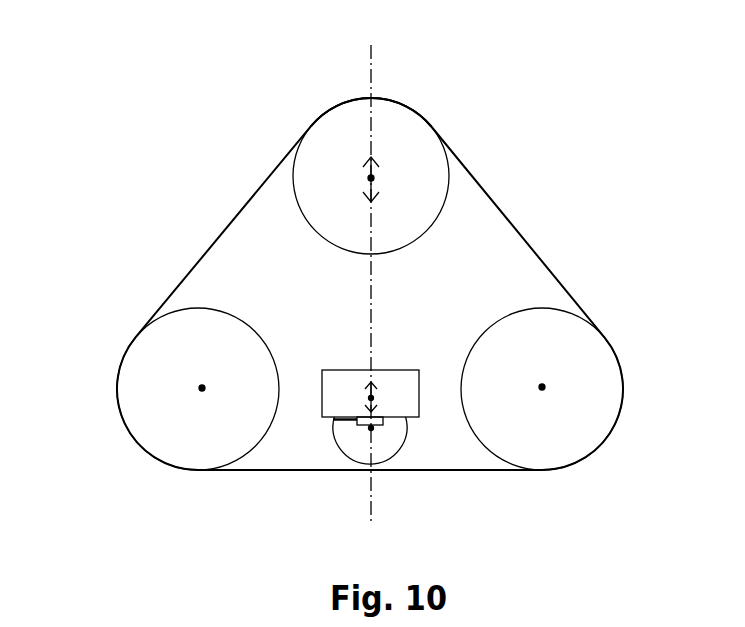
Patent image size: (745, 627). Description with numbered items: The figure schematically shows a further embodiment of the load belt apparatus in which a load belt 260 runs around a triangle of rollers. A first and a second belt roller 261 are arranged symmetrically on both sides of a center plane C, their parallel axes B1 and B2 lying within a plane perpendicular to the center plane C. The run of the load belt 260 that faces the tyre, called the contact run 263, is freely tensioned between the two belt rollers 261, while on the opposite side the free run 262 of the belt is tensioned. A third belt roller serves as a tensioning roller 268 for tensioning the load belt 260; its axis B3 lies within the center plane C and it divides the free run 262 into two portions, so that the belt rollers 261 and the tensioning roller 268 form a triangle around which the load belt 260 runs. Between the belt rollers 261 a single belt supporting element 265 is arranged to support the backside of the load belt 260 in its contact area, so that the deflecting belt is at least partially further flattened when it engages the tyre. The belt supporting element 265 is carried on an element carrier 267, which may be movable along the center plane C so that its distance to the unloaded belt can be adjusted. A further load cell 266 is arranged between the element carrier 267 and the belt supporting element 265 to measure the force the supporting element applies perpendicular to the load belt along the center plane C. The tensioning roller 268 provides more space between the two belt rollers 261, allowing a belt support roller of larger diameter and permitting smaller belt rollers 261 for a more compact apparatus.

The load belt 260 is at (327, 168).
The belt roller 261 is at (175, 335).
The free run 262 is at (238, 212).
The contact run 263 is at (398, 508).
The belt supporting element 265 is at (322, 469).
The load cell 266 is at (340, 372).
The element carrier 267 is at (403, 375).
The tensioning roller 268 is at (413, 122).
The axis of first belt roller B1 is at (199, 394).
The axis of second belt roller B2 is at (539, 393).
The axis of tensioning roller B3 is at (374, 182).
The center plane C is at (392, 271).